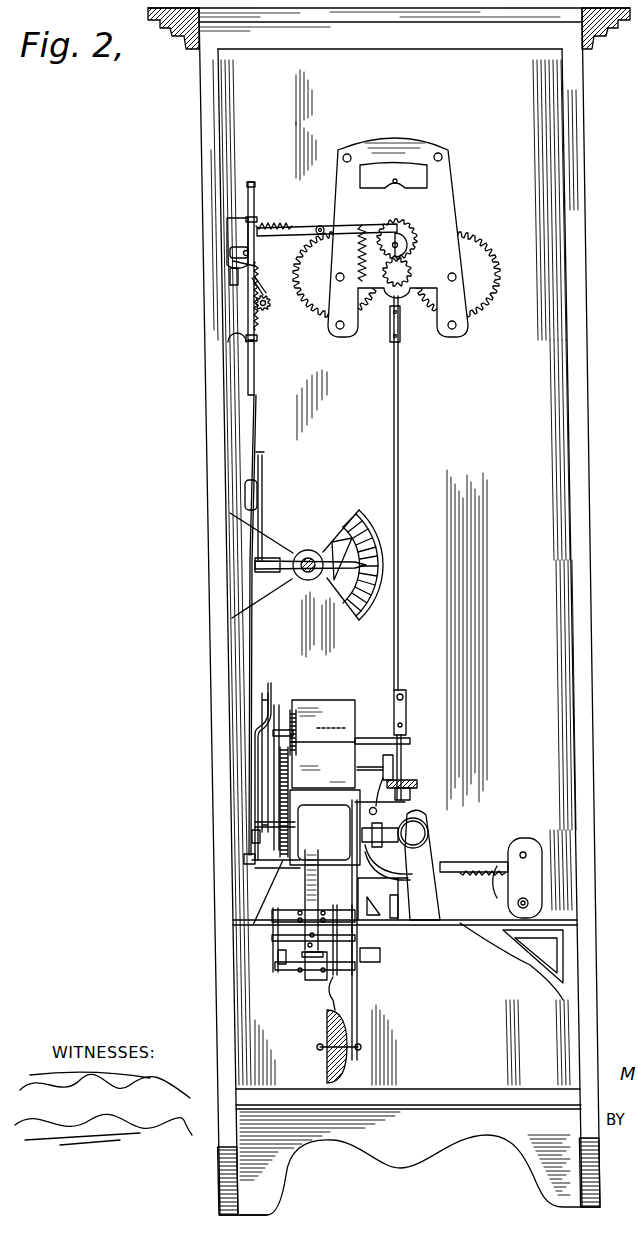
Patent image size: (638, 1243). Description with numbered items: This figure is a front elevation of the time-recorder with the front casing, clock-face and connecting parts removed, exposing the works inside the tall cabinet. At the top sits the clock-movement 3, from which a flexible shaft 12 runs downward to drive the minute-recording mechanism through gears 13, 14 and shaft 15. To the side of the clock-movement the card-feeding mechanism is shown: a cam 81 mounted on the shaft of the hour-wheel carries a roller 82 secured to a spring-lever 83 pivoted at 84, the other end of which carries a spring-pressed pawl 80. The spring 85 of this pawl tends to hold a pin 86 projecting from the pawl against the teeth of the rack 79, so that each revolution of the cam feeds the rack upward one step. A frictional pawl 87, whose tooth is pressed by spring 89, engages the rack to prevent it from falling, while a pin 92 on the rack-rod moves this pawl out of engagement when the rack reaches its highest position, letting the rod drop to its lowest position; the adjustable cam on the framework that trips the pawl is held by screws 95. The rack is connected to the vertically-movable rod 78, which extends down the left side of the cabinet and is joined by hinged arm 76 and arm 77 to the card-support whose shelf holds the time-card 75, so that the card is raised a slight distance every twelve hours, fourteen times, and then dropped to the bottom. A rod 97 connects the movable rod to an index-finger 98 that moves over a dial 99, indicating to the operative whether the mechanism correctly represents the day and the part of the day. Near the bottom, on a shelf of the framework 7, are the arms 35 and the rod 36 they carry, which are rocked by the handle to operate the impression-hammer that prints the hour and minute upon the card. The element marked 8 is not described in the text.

The clock-movement 3 is at (452, 212).
The framework 7 is at (458, 920).
The ring 8 is at (358, 813).
The flexible shaft 12 is at (400, 409).
The gear 13 is at (413, 782).
The gear 14 is at (385, 763).
The shaft 15 is at (380, 781).
The arms 35 is at (372, 937).
The rod 36 is at (367, 962).
The card 75 is at (335, 702).
The hinged arm 76 is at (333, 906).
The arm 77 is at (257, 870).
The vertically-movable rod 78 is at (258, 410).
The rack 79 is at (255, 367).
The spring-pressed pawl 80 is at (256, 251).
The cam 81 is at (410, 240).
The roller 82 is at (400, 226).
The spring-lever 83 is at (383, 227).
The pivot 84 is at (322, 226).
The spring 85 is at (272, 225).
The pin 86 is at (256, 268).
The frictional pawl 87 is at (272, 306).
The spring 89 is at (264, 291).
The pin 92 is at (258, 340).
The screws 95 is at (237, 246).
The rod 97 is at (263, 496).
The index-finger 98 is at (336, 566).
The dial 99 is at (370, 537).